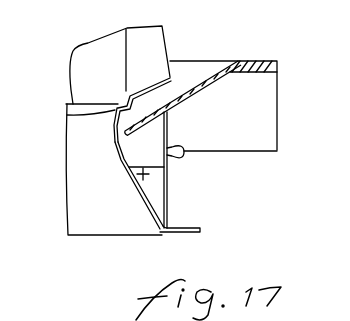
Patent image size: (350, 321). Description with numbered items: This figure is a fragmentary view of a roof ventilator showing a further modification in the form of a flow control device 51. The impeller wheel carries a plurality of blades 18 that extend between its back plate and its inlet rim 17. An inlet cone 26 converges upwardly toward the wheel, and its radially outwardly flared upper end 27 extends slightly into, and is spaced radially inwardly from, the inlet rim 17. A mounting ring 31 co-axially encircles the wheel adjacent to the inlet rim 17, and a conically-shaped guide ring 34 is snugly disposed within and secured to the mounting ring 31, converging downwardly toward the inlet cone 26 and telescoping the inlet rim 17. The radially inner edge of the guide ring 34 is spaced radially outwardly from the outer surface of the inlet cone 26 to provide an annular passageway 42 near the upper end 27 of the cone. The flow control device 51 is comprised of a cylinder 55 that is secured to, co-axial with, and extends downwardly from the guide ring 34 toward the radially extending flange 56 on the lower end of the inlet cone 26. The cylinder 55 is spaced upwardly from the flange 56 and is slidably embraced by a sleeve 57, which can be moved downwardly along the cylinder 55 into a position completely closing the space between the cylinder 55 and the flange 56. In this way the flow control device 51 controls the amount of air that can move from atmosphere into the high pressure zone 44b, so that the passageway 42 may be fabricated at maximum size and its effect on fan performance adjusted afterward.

The blades 18 is at (160, 37).
The inlet rim 17 is at (145, 87).
The upper end of the inlet cone 27 is at (68, 118).
The annular passageway 42 is at (117, 113).
The inlet cone 26 is at (139, 190).
The sleeve 57 is at (168, 201).
The radially extending flange 56 is at (175, 236).
The mounting ring 31 is at (250, 61).
The guide ring 34 is at (215, 77).
The cylinder 55 is at (168, 116).
The flow control device 51 is at (188, 130).
The high pressure zone 44b is at (149, 175).